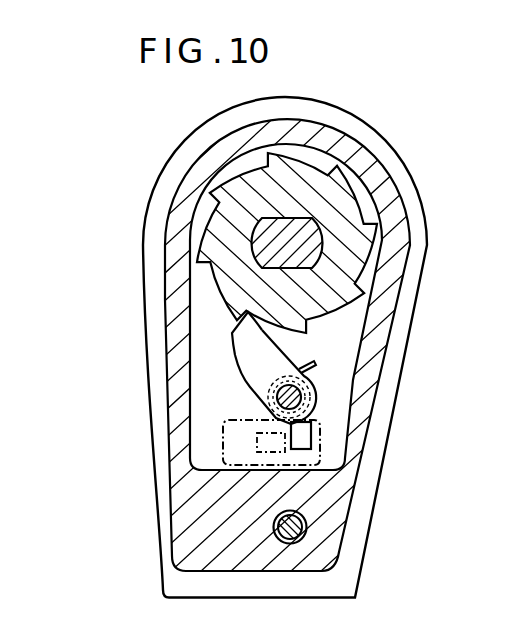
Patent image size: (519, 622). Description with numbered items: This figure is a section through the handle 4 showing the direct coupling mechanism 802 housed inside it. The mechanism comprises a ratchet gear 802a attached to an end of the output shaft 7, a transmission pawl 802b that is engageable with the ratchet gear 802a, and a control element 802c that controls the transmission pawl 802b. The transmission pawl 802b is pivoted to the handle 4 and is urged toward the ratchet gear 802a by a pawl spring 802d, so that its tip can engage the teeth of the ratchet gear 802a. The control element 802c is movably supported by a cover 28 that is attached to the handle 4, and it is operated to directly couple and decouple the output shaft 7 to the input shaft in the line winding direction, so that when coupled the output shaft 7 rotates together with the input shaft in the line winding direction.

The handle 4 is at (380, 435).
The cover 28 is at (388, 273).
The output shaft 7 is at (266, 234).
The direct coupling mechanism 802 is at (272, 345).
The ratchet gear 802a is at (227, 283).
The transmission pawl 802b is at (230, 335).
The control element 802c is at (223, 438).
The pawl spring 802d is at (316, 368).